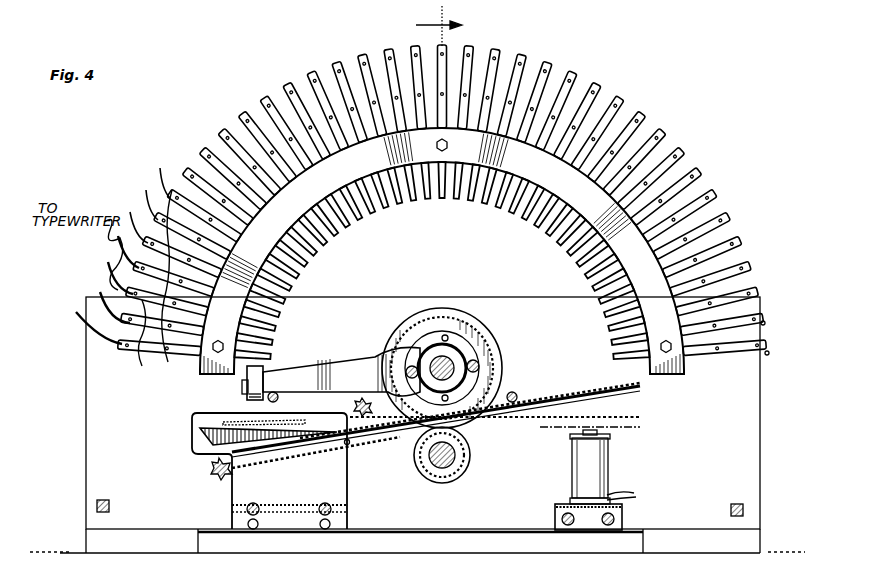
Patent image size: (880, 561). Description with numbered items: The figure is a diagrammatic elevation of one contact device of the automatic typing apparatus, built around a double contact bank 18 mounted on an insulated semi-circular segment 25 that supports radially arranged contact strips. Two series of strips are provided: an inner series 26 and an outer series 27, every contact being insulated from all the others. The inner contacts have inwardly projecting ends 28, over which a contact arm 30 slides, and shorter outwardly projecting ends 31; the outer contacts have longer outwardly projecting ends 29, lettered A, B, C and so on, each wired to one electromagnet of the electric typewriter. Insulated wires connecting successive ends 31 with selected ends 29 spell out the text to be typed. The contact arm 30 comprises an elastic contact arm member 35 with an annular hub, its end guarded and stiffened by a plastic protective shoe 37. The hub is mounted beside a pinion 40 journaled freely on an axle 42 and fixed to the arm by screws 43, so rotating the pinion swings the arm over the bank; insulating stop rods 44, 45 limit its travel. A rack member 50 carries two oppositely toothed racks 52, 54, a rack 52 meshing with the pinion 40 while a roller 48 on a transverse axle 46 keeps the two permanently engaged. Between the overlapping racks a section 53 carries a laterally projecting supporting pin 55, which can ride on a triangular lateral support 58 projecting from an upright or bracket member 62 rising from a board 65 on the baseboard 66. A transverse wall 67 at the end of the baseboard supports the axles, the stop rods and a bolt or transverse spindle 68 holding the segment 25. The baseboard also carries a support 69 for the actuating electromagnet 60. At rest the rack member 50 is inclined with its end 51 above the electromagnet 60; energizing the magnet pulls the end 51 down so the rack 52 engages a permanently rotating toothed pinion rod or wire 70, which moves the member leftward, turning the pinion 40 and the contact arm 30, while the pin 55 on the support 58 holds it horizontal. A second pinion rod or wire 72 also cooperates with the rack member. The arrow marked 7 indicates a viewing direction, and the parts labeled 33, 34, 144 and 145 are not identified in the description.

The section line 7 is at (430, 26).
The double contact bank 18 is at (236, 82).
The insulated semi-circular segment 25 is at (217, 385).
The inner series of contact strips 26 is at (264, 360).
The outer series of contact strips 27 is at (140, 363).
The inwardly projecting ends 28 is at (268, 342).
The outwardly projecting ends 29 is at (196, 160).
The contact arm 30 is at (352, 360).
The outwardly projecting ends 31 is at (700, 204).
The segment ring 33 is at (442, 251).
The segment inner edge 34 is at (264, 270).
The contact arm member 35 is at (318, 366).
The protective shoe 37 is at (248, 398).
The pinion 40 is at (490, 350).
The axle 42 is at (448, 362).
The screws 43 is at (408, 367).
The stop rod 44 is at (276, 393).
The stop rod 45 is at (514, 392).
The transverse axle 46 is at (426, 466).
The roller 48 is at (456, 458).
The rack member 50 is at (488, 418).
The end of the rack member 51 is at (640, 410).
The rack 52 is at (555, 397).
The section 53 is at (372, 448).
The rack 54 is at (300, 460).
The supporting pin 55 is at (344, 446).
The triangular lateral support 58 is at (204, 437).
The actuating electromagnet 60 is at (604, 468).
The upright or bracket member 62 is at (236, 488).
The board 65 is at (332, 512).
The baseboard 66 is at (428, 531).
The transverse wall 67 is at (92, 437).
The bolt or transverse spindle 68 is at (671, 350).
The support 69 is at (620, 517).
The pinion rod or wire 70 is at (360, 400).
The pinion rod or wire 72 is at (212, 468).
The type bar 144 is at (764, 323).
The type bar 145 is at (768, 353).